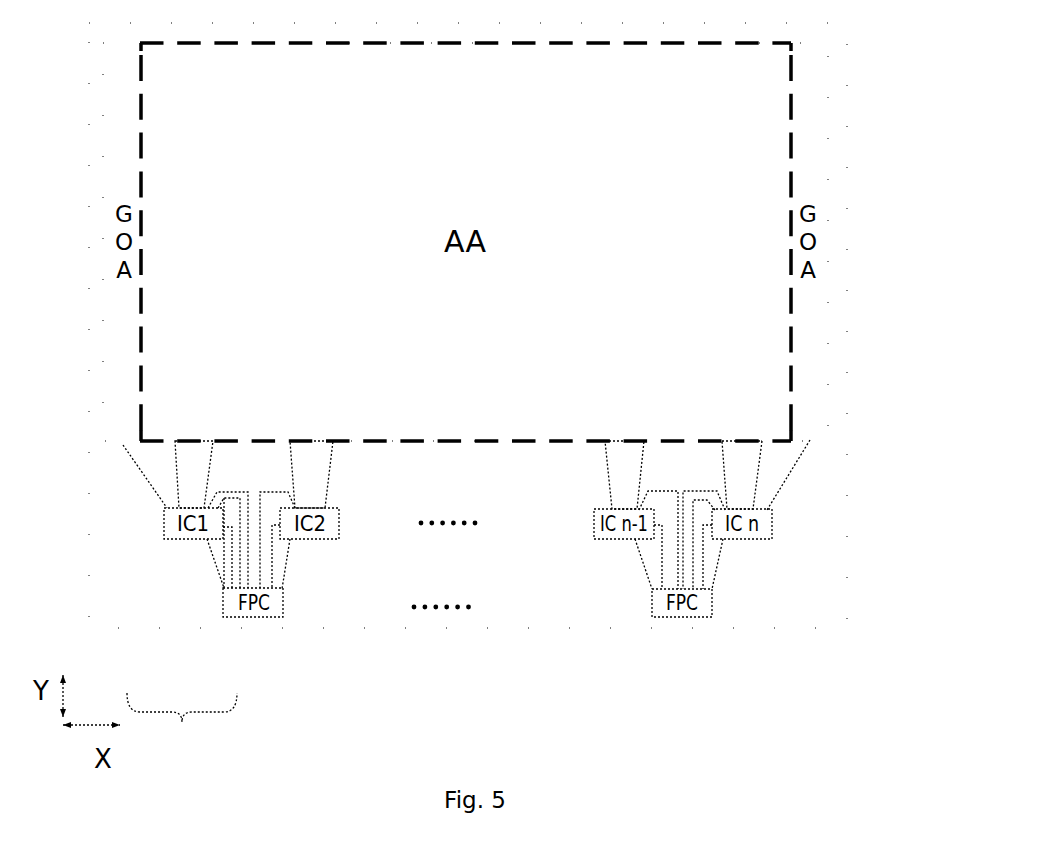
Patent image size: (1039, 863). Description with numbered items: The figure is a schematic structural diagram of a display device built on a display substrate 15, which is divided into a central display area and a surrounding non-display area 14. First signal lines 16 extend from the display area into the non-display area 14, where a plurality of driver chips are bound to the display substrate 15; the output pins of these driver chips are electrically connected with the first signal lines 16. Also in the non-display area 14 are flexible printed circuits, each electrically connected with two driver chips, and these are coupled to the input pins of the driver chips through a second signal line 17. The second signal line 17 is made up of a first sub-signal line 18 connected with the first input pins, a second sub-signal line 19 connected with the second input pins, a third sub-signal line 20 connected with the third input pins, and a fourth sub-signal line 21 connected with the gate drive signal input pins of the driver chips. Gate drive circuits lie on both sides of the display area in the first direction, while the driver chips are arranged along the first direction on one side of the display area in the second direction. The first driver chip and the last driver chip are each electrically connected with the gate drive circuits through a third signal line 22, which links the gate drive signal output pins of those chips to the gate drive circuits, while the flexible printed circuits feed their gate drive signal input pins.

The non-display area 14 is at (823, 503).
The display substrate 15 is at (848, 354).
The first signal lines 16 is at (179, 495).
The second signal line 17 is at (182, 724).
The first sub-signal line 18 is at (224, 533).
The second sub-signal line 19 is at (232, 548).
The third sub-signal line 20 is at (247, 589).
The fourth sub-signal line 21 is at (240, 568).
The third signal line 22 is at (131, 455).